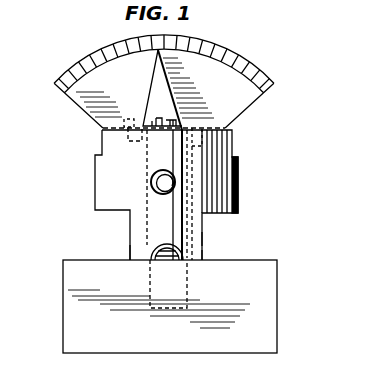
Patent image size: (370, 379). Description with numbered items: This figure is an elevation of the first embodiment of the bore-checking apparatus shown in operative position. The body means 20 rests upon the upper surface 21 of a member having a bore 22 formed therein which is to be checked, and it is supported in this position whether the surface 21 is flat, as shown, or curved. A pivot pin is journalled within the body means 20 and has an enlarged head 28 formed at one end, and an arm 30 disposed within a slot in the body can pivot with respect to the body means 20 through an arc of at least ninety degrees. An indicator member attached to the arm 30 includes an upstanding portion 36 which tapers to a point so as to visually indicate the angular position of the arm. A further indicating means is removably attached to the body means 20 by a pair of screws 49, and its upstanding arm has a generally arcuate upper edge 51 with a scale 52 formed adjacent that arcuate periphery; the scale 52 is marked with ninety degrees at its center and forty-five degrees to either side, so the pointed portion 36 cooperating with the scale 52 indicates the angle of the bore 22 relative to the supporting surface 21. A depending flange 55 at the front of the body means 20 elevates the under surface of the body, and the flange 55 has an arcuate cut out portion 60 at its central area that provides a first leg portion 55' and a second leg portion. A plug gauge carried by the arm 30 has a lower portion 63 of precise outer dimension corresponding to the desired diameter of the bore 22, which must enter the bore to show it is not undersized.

The body means 20 is at (240, 191).
The upper surface 21 is at (258, 260).
The bore 22 is at (190, 312).
The enlarged head 28 is at (152, 186).
The arm 30 is at (147, 158).
The upstanding portion 36 is at (162, 76).
The screws 49 is at (128, 118).
The upper edge 51 is at (207, 40).
The scale 52 is at (241, 62).
The depending flange 55 is at (219, 233).
The first leg portion 55' is at (124, 242).
The arcuate cut out portion 60 is at (153, 263).
The lower portion 63 is at (190, 287).